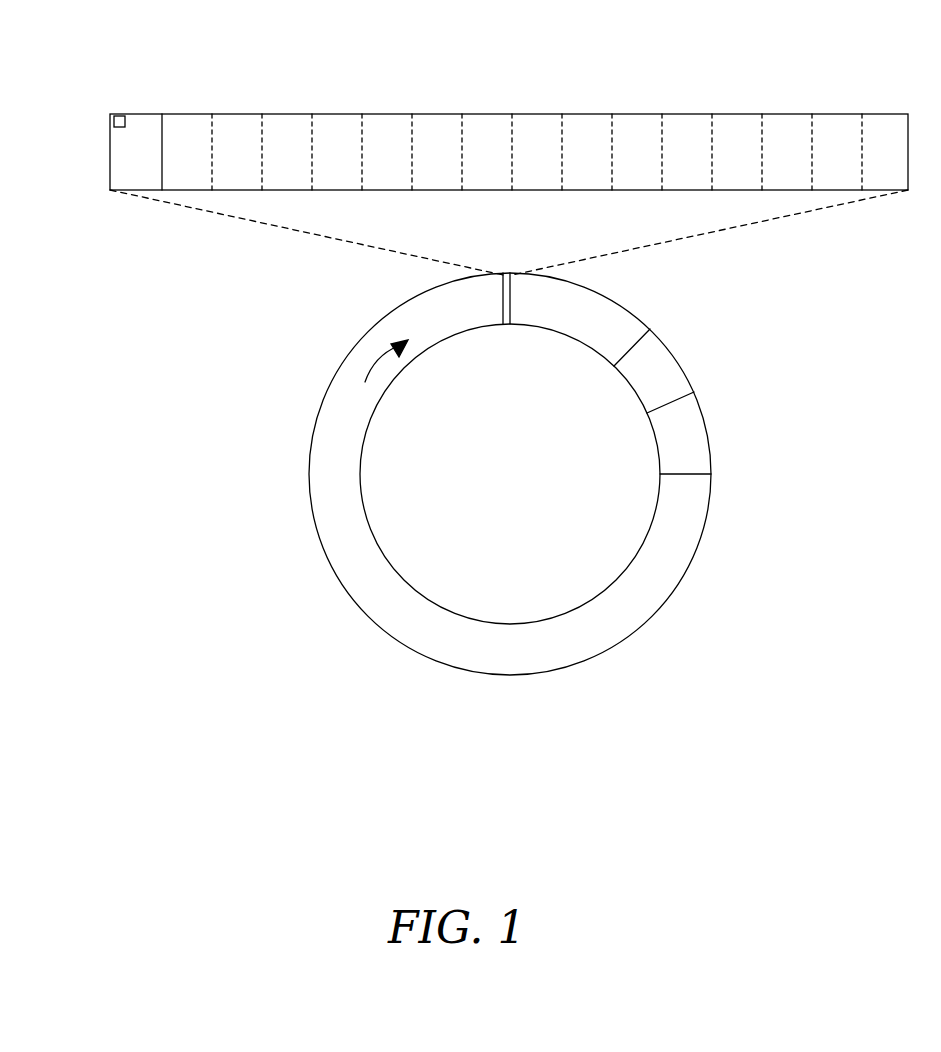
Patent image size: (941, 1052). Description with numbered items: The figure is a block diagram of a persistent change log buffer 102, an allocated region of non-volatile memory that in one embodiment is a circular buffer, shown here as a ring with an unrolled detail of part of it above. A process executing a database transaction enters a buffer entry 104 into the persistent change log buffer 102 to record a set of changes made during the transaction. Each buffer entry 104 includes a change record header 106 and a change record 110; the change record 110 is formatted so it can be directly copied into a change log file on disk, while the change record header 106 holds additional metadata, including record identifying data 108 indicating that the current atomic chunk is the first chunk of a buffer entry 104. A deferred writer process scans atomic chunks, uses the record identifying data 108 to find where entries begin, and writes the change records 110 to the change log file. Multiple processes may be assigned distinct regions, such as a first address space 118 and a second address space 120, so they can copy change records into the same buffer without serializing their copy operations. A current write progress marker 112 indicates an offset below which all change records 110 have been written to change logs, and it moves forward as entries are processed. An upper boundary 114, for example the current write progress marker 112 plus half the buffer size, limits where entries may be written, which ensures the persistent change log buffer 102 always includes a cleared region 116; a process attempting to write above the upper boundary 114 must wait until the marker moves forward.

The persistent change log buffer 102 is at (512, 474).
The buffer entry 104 is at (461, 180).
The change record header 106 is at (131, 113).
The record identifying data 108 is at (118, 113).
The change record 110 is at (536, 116).
The current write progress marker 112 is at (400, 408).
The upper boundary 114 is at (512, 474).
The cleared region 116 is at (320, 478).
The first address space 118 is at (662, 373).
The second address space 120 is at (697, 437).